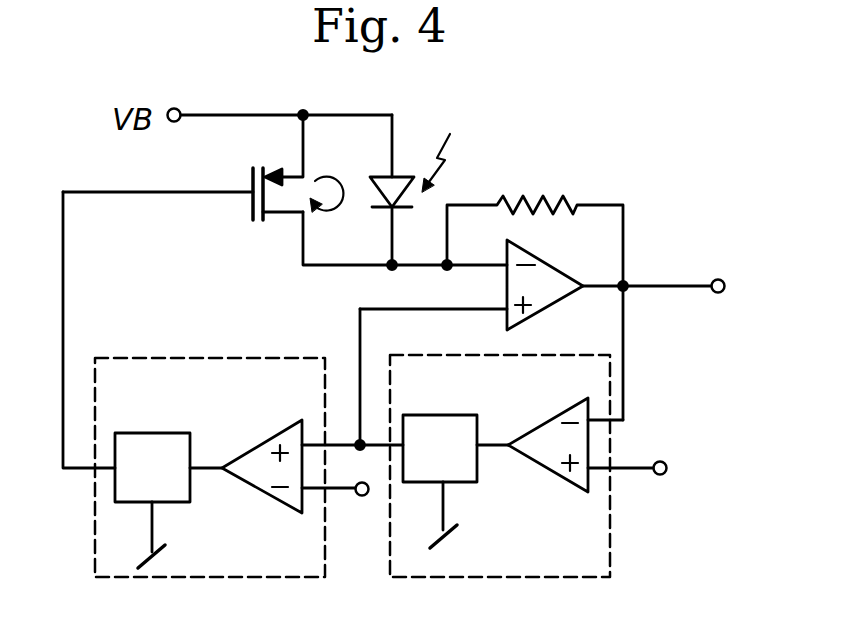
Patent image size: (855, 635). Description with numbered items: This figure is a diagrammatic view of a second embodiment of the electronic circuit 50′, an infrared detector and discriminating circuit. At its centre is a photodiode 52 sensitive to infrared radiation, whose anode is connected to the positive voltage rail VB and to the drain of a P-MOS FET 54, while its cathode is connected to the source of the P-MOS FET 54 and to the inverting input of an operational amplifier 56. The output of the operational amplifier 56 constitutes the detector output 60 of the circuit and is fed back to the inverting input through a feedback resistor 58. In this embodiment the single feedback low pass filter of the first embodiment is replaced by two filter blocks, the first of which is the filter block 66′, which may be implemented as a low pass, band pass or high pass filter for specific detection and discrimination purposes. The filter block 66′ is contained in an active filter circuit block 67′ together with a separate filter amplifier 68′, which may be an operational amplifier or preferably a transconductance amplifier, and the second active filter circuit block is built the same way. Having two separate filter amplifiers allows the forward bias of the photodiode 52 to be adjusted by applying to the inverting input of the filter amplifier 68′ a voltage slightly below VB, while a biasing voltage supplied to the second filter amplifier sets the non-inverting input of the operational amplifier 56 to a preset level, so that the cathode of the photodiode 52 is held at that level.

The electronic circuit 50′ is at (736, 122).
The photodiode 52 is at (400, 177).
The P-MOS FET 54 is at (253, 200).
The operational amplifier 56 is at (550, 297).
The feedback resistor 58 is at (545, 196).
The detector output 60 is at (718, 293).
The filter block 66′ is at (188, 372).
The active filter circuit block 67′ is at (232, 440).
The filter amplifier 68′ is at (262, 480).